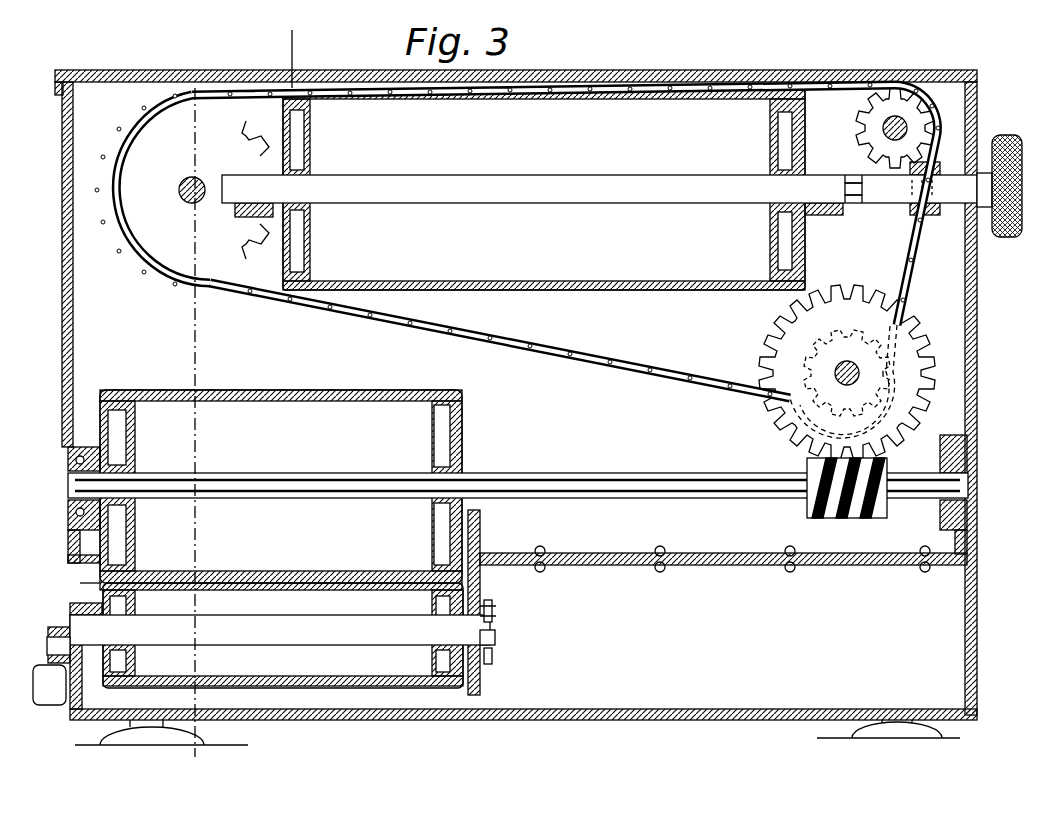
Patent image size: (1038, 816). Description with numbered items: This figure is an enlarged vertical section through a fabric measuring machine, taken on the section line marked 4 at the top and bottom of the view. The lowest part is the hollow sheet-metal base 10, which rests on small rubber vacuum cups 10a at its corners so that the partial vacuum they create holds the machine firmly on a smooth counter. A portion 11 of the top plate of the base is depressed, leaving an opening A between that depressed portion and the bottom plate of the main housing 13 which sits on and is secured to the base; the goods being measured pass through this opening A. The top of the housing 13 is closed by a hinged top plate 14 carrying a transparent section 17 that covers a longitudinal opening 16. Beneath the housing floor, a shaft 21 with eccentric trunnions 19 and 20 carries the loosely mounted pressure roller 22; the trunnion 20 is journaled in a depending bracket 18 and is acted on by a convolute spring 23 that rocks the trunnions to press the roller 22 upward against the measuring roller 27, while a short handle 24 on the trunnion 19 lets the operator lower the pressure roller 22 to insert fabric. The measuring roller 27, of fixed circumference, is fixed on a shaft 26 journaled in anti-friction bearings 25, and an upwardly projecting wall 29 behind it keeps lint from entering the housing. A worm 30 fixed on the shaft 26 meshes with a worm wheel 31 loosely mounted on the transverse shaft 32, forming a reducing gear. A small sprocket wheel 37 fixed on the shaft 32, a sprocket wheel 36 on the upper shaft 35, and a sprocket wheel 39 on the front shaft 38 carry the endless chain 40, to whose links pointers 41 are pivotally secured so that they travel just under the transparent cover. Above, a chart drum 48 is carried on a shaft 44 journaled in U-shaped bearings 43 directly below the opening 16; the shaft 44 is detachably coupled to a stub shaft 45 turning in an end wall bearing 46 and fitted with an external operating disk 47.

The section line 4- 4 is at (300, 28).
The base 10 is at (963, 632).
The vacuum cups 10a is at (156, 740).
The depressed portion 11 is at (88, 618).
The main housing 13 is at (62, 330).
The top plate 14 is at (202, 80).
The opening 16 is at (630, 72).
The transparent section 17 is at (113, 70).
The bracket 18 is at (478, 665).
The trunnion 19 is at (50, 642).
The trunnion 20 is at (497, 638).
The shaft 21 is at (268, 635).
The pressure roller 22 is at (282, 582).
The convolute spring 23 is at (490, 620).
The handle 24 is at (52, 705).
The anti-friction bearings 25 is at (68, 455).
The shaft 26 is at (617, 472).
The measuring roller 27 is at (300, 402).
The wall 29 is at (482, 537).
The worm 30 is at (840, 520).
The worm wheel 31 is at (865, 371).
The shaft 32 is at (868, 375).
The shaft 35 is at (902, 113).
The sprocket wheel 36 is at (885, 96).
The sprocket wheel 37 is at (903, 312).
The shaft 38 is at (181, 184).
The sprocket wheel 39 is at (163, 262).
The endless flexible member 40 is at (517, 214).
The pointers 41 is at (782, 78).
The U-shaped bearings 43 is at (252, 217).
The shaft 44 is at (418, 185).
The stub shaft 45 is at (882, 200).
The bearing 46 is at (950, 172).
The operating disk 47 is at (1003, 240).
The drum 48 is at (610, 100).
The opening A is at (80, 582).